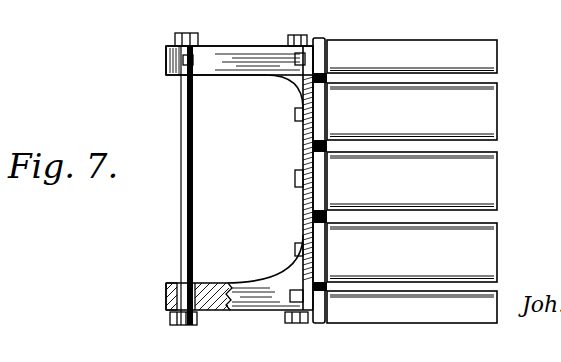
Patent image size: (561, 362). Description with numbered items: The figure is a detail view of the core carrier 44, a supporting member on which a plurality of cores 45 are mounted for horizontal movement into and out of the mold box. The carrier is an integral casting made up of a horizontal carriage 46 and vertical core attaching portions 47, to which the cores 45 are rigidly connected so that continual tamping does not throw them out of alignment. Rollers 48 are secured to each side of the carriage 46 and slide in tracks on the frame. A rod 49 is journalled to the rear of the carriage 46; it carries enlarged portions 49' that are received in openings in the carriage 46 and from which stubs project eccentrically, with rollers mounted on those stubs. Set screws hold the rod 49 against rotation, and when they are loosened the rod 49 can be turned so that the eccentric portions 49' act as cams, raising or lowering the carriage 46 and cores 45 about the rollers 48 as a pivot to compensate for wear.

The core carrier 44 is at (293, 275).
The cores 45 is at (488, 173).
The horizontal carriage 46 is at (242, 62).
The vertical core attaching portions 47 is at (313, 153).
The rollers 48 is at (302, 45).
The rod 49 is at (181, 185).
The enlarged portions 49' is at (217, 282).